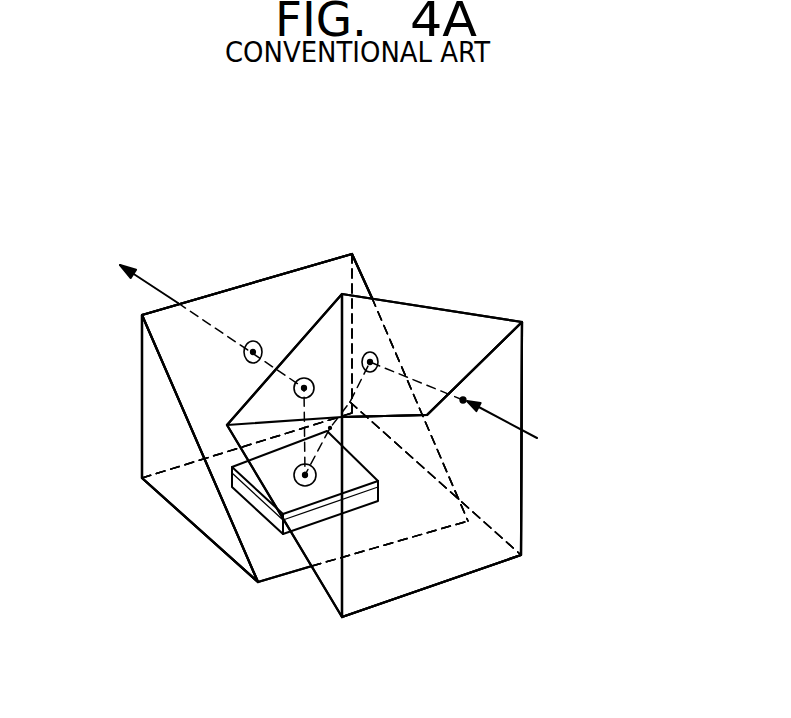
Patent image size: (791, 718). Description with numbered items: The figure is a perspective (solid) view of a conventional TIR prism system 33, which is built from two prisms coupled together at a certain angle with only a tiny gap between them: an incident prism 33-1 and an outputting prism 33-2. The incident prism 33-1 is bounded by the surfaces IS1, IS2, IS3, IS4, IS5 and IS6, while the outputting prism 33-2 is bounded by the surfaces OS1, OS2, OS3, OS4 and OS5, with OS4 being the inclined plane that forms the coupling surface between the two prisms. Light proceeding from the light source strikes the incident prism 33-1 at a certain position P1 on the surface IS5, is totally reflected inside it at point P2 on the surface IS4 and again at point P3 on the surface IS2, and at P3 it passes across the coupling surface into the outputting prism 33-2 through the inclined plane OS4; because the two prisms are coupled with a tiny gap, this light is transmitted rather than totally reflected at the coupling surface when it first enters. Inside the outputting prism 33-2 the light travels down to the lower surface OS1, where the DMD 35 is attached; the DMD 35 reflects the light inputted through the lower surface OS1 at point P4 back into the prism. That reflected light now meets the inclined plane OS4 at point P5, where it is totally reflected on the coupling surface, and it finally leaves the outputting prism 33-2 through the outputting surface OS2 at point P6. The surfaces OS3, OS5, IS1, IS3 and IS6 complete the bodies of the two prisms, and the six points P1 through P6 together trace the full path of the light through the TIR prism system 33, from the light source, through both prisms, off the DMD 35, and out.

The TIR prism system 33 is at (332, 404).
The incident prism 33-1 is at (432, 306).
The outputting prism 33-2 is at (142, 394).
The DMD 35 is at (302, 524).
The lower surface of outputting prism OS1 is at (192, 510).
The outputting surface of outputting prism OS2 is at (152, 450).
The surface of outputting prism OS3 is at (155, 423).
The inclined plane of outputting prism OS4 is at (215, 347).
The surface of outputting prism OS5 is at (358, 280).
The surface of incident prism IS1 is at (448, 568).
The surface of incident prism IS2 is at (372, 548).
The surface of incident prism IS3 is at (327, 590).
The surface of incident prism IS4 is at (478, 323).
The surface of incident prism IS5 is at (503, 460).
The surface of incident prism IS6 is at (510, 407).
The incident position P1 is at (464, 399).
The total reflection point P2 is at (373, 371).
The transmission point P3 is at (333, 427).
The reflection point on lower surface P4 is at (293, 474).
The total reflection point on inclined plane P5 is at (305, 378).
The output point P6 is at (255, 341).